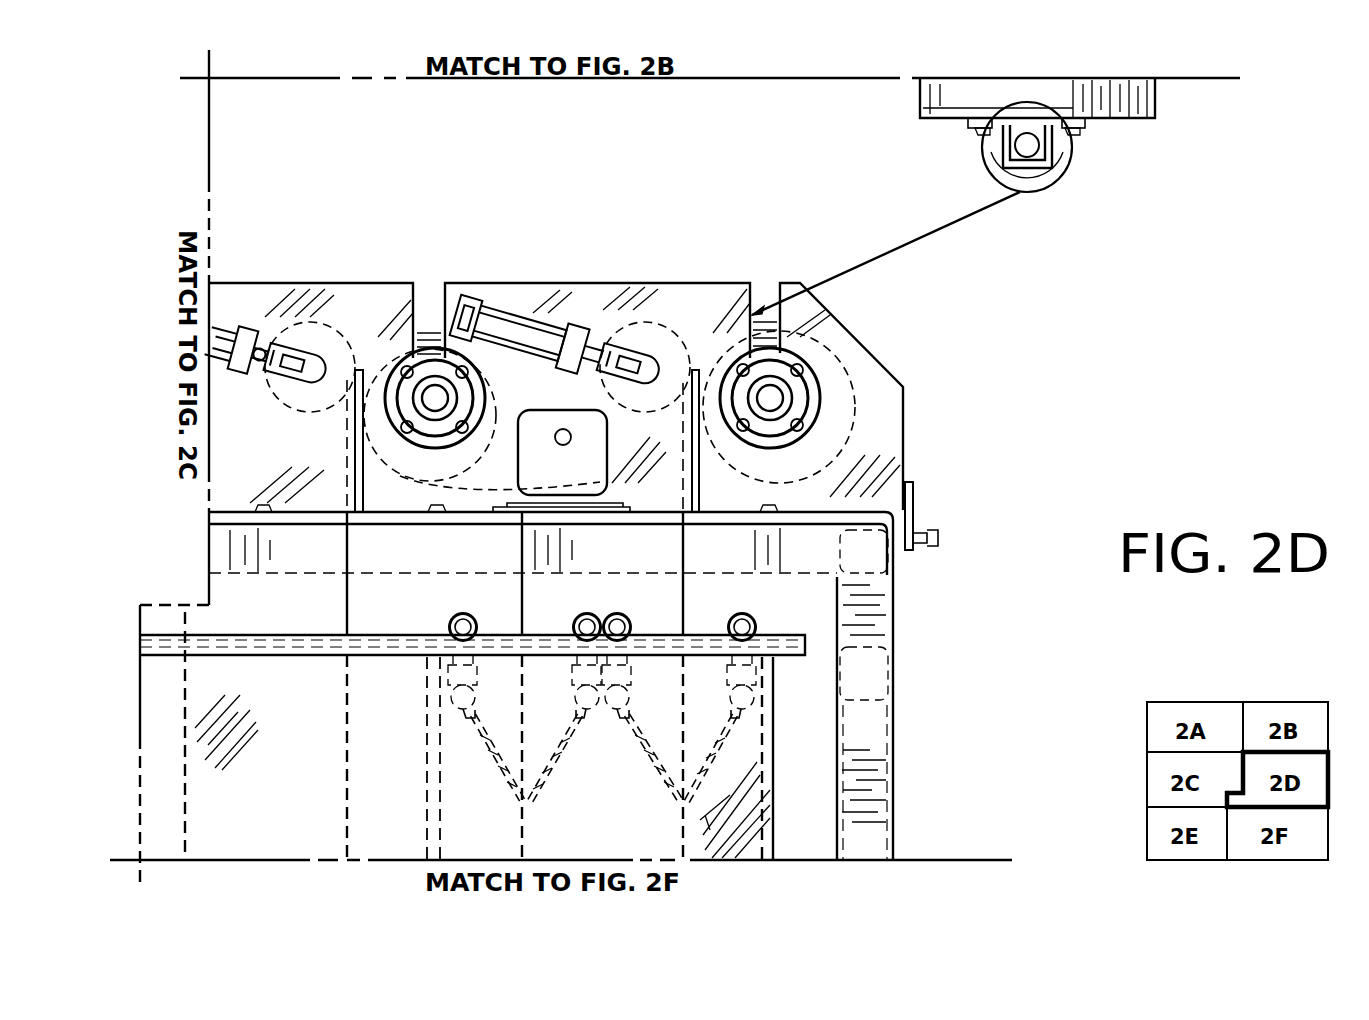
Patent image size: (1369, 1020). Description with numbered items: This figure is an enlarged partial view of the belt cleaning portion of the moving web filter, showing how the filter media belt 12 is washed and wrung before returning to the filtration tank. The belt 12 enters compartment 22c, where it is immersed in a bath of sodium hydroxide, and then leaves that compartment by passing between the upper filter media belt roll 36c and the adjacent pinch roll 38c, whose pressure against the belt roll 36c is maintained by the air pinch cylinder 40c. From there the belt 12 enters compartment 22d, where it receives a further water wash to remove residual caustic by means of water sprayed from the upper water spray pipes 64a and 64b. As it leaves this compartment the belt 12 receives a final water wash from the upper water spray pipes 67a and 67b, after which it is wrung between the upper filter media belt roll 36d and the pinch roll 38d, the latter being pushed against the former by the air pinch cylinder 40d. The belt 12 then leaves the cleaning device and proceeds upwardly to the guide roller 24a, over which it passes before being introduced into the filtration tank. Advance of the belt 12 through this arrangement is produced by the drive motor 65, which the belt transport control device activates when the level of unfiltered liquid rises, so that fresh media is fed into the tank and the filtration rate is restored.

The filter media belt 12 is at (680, 604).
The compartment 22c is at (316, 805).
The compartment 22d is at (706, 836).
The guide roller 24a is at (1062, 175).
The upper filter media belt roll 36c is at (428, 312).
The upper filter media belt roll 36d is at (702, 318).
The pinch roll 38c is at (341, 332).
The pinch roll 38d is at (672, 335).
The air pinch cylinder 40c is at (230, 320).
The air pinch cylinder 40d is at (510, 300).
The upper water spray pipe 64a is at (456, 718).
The upper water spray pipe 64b is at (596, 716).
The drive motor 65 is at (620, 445).
The upper water spray pipe 67a is at (632, 730).
The upper water spray pipe 67b is at (745, 718).